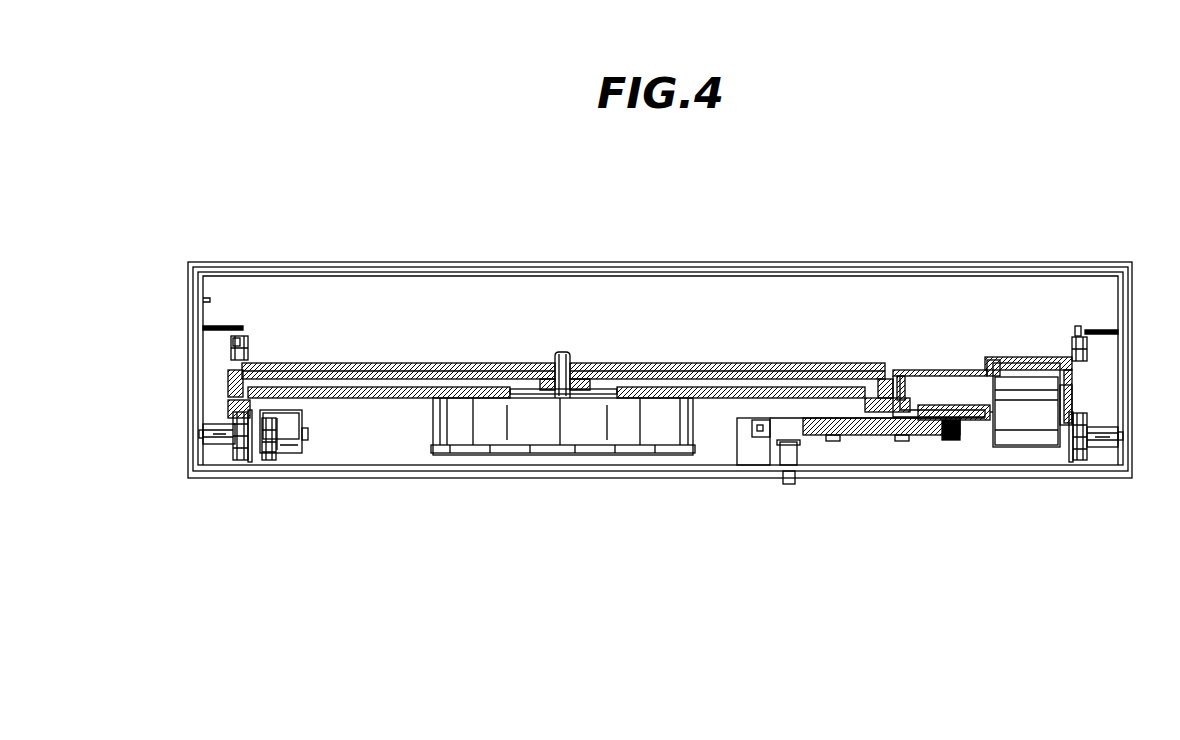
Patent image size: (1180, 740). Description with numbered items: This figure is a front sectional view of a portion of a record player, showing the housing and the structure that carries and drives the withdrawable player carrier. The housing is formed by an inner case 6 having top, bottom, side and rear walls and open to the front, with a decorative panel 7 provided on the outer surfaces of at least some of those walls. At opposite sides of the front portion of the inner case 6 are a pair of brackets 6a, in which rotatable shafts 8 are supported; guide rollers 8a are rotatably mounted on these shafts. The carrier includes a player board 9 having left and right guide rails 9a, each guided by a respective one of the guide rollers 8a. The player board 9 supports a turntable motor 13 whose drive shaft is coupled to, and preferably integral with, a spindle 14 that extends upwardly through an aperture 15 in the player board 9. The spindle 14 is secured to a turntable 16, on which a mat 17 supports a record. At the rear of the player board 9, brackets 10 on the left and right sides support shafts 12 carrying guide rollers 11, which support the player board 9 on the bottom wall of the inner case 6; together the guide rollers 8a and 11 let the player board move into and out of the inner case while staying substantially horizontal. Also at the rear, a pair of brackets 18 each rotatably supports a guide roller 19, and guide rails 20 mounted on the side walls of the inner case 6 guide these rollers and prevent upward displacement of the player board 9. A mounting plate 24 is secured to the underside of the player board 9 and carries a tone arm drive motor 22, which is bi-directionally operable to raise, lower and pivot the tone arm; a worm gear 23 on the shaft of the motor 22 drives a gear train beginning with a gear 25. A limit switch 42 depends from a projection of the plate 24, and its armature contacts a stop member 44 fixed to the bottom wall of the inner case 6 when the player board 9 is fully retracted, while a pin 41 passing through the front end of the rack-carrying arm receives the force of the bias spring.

The inner case 6 is at (303, 278).
The brackets 6a is at (245, 462).
The decorative panel 7 is at (381, 264).
The rotatable shafts 8 is at (205, 434).
The guide rollers 8a is at (233, 418).
The player board 9 is at (362, 399).
The guide rails 9a is at (230, 404).
The brackets 10 is at (302, 421).
The guide rollers 11 is at (268, 462).
The shafts 12 is at (305, 447).
The turntable motor 13 is at (432, 430).
The spindle 14 is at (563, 353).
The aperture 15 is at (514, 388).
The turntable 16 is at (471, 364).
The mat 17 is at (628, 364).
The brackets 18 is at (252, 355).
The guide roller 19 is at (243, 338).
The guide rails 20 is at (224, 326).
The tone arm drive motor 22 is at (1026, 448).
The worm gear 23 is at (978, 422).
The mounting plate 24 is at (915, 370).
The gear 25 is at (935, 408).
The pin 41 is at (792, 472).
The limit switch 42 is at (758, 445).
The stop member 44 is at (740, 445).